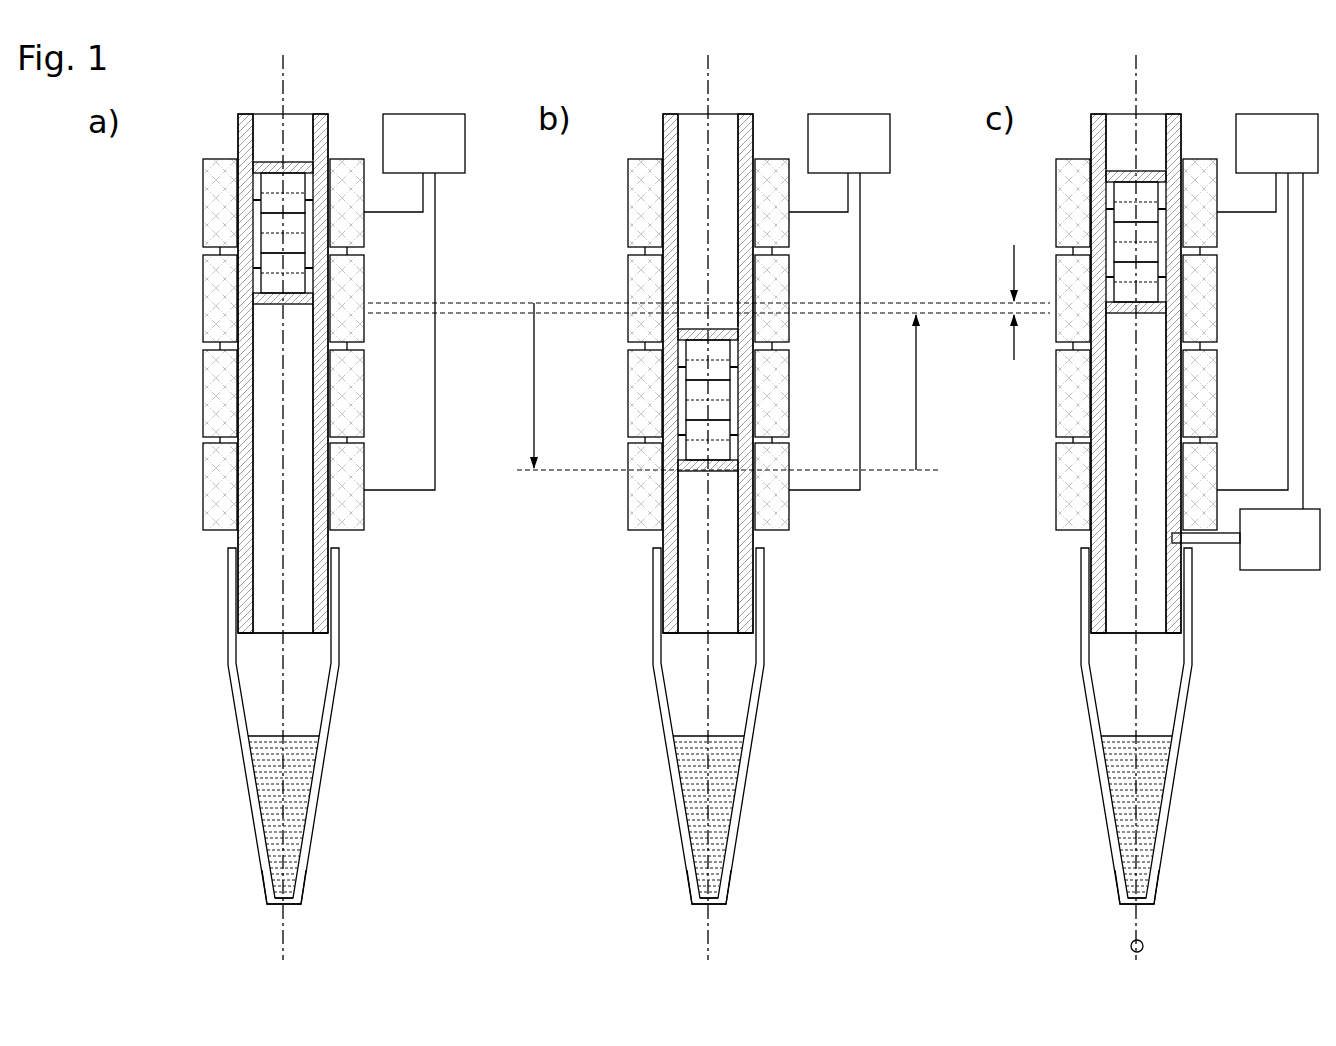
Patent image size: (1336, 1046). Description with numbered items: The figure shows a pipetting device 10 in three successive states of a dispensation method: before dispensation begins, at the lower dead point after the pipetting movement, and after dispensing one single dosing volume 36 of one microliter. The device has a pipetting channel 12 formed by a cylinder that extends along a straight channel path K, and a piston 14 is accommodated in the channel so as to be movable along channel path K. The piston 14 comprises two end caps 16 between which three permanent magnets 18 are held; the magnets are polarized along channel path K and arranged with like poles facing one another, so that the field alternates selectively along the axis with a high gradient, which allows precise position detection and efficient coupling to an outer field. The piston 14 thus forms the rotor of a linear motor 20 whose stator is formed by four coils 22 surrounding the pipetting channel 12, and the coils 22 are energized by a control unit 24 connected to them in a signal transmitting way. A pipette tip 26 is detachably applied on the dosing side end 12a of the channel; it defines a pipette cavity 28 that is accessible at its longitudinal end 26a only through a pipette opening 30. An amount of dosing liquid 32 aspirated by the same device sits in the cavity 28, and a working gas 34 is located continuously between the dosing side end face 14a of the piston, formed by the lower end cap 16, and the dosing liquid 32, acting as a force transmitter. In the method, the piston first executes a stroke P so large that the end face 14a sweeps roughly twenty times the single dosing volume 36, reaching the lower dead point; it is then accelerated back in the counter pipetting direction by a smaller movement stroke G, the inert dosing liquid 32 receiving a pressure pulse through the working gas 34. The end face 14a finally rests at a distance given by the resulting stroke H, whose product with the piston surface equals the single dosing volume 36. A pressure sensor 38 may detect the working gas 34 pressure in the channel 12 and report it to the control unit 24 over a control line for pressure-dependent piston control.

In FIG. 1a, the pipetting device 10 is at (269, 503).
In FIG. 1b, the pipetting device 10 is at (713, 503).
In FIG. 1c, the pipetting device 10 is at (1140, 501).
In FIG. 1a, the pipetting channel 12 is at (227, 339).
In FIG. 1b, the pipetting channel 12 is at (669, 370).
In FIG. 1c, the pipetting channel 12 is at (1104, 352).
In FIG. 1a, the dosing side end 12a is at (254, 739).
In FIG. 1b, the dosing side end 12a is at (682, 739).
In FIG. 1c, the dosing side end 12a is at (1112, 739).
In FIG. 1a, the piston 14 is at (270, 148).
In FIG. 1b, the piston 14 is at (708, 220).
In FIG. 1c, the piston 14 is at (1136, 120).
In FIG. 1a, the dosing side end face 14a is at (297, 306).
In FIG. 1b, the dosing side end face 14a is at (708, 552).
In FIG. 1c, the dosing side end face 14a is at (1136, 473).
In FIG. 1a, the end cap 16 is at (220, 255).
In FIG. 1b, the end cap 16 is at (708, 421).
In FIG. 1c, the end cap 16 is at (1136, 267).
In FIG. 1a, the permanent magnets 18 is at (270, 270).
In FIG. 1b, the permanent magnets 18 is at (708, 400).
In FIG. 1c, the permanent magnets 18 is at (1136, 242).
In FIG. 1a, the linear motor 20 is at (219, 344).
In FIG. 1b, the linear motor 20 is at (663, 342).
In FIG. 1c, the linear motor 20 is at (1089, 336).
In FIG. 1a, the coils 22 is at (212, 190).
In FIG. 1b, the coils 22 is at (671, 342).
In FIG. 1c, the coils 22 is at (1095, 336).
In FIG. 1a, the control unit 24 is at (414, 302).
In FIG. 1b, the control unit 24 is at (839, 302).
In FIG. 1c, the control unit 24 is at (1267, 302).
In FIG. 1a, the pipette tip 26 is at (235, 705).
In FIG. 1b, the pipette tip 26 is at (668, 726).
In FIG. 1c, the pipette tip 26 is at (1096, 726).
In FIG. 1a, the longitudinal end 26a is at (250, 882).
In FIG. 1b, the longitudinal end 26a is at (657, 884).
In FIG. 1c, the longitudinal end 26a is at (1085, 884).
In FIG. 1a, the pipette cavity 28 is at (283, 719).
In FIG. 1b, the pipette cavity 28 is at (708, 719).
In FIG. 1c, the pipette cavity 28 is at (1136, 719).
In FIG. 1a, the pipette opening 30 is at (284, 904).
In FIG. 1b, the pipette opening 30 is at (755, 914).
In FIG. 1c, the pipette opening 30 is at (1186, 914).
In FIG. 1a, the dosing liquid 32 is at (275, 787).
In FIG. 1b, the dosing liquid 32 is at (661, 814).
In FIG. 1c, the dosing liquid 32 is at (1089, 814).
In FIG. 1a, the working gas 34 is at (300, 597).
In FIG. 1b, the working gas 34 is at (754, 617).
In FIG. 1c, the working gas 34 is at (1182, 617).
In FIG. 1c, the single dosing volume 36 is at (1131, 946).
In FIG. 1c, the pressure sensor 38 is at (1246, 371).
In FIG. 1a, the channel path K is at (284, 90).
In FIG. 1b, the channel path K is at (733, 507).
In FIG. 1c, the channel path K is at (1161, 507).
In FIG. 1b, the stroke P is at (534, 412).
In FIG. 1b, the movement stroke G is at (916, 428).
In FIG. 1c, the resulting stroke H is at (1014, 278).